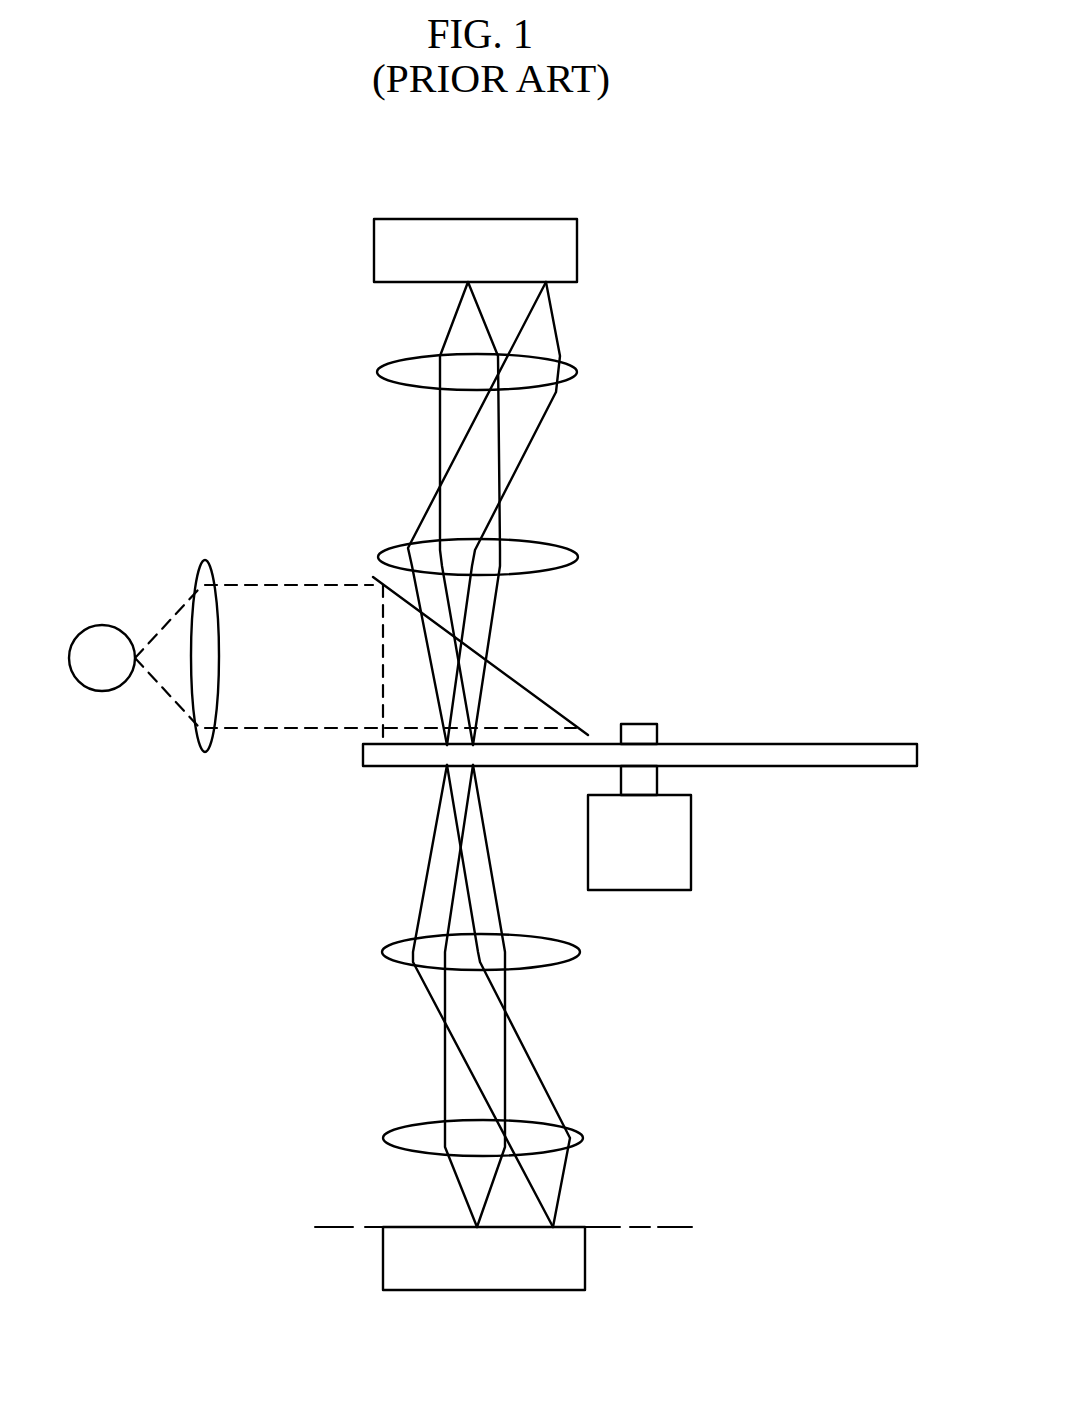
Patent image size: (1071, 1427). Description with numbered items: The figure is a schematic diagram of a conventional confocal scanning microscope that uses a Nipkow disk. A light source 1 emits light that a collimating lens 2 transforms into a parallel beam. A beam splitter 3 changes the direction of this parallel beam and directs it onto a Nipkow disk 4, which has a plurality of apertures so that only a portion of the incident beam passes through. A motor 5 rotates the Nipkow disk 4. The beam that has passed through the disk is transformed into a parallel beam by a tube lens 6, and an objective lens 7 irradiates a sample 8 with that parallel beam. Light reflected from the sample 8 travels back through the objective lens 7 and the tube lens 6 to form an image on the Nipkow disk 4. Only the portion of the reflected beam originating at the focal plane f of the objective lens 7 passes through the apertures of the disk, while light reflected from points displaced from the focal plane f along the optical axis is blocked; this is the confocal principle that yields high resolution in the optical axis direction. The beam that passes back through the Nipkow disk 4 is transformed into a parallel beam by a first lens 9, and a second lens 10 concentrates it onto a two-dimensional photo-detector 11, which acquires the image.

The light source 1 is at (86, 638).
The collimating lens 2 is at (203, 752).
The beam splitter 3 is at (527, 687).
The Nipkow disk 4 is at (376, 753).
The motor 5 is at (680, 868).
The tube lens 6 is at (573, 952).
The objective lens 7 is at (572, 1135).
The sample 8 is at (573, 1282).
The first lens 9 is at (572, 551).
The second lens 10 is at (568, 363).
The two-dimensional photo-detector 11 is at (567, 240).
The focal plane f is at (511, 1228).